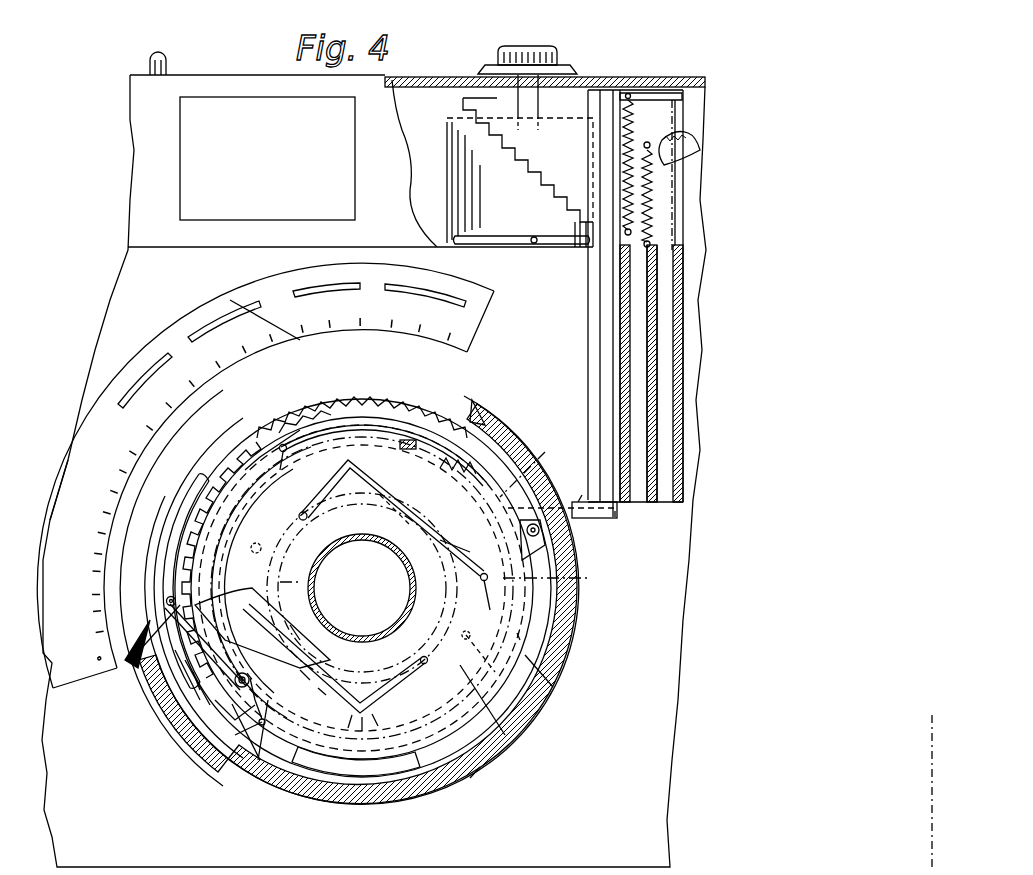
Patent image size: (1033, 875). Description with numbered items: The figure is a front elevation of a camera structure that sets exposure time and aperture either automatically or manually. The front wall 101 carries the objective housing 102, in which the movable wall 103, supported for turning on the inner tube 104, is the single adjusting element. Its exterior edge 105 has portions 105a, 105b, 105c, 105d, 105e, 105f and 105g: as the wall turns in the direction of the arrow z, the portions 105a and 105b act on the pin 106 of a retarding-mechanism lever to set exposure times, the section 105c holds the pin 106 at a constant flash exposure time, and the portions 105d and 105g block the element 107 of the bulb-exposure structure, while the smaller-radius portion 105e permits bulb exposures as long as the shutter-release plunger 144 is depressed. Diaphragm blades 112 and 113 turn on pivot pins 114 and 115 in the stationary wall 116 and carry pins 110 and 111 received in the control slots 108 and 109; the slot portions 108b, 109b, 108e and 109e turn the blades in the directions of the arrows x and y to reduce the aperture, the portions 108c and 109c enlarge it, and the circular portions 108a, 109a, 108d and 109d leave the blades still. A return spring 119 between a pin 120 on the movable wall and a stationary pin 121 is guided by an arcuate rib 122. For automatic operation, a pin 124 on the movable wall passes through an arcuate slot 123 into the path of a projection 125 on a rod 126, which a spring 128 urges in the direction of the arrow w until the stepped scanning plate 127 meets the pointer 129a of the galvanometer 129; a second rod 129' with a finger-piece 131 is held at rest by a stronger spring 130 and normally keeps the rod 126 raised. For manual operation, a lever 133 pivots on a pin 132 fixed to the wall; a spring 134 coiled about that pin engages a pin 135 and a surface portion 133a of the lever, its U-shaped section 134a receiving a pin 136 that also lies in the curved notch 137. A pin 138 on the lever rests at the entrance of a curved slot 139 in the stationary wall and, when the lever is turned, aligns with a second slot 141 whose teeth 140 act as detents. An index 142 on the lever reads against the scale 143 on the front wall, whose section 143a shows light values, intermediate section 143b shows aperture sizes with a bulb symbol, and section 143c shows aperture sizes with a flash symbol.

The front wall 101 is at (82, 753).
The objective housing 102 is at (576, 624).
The movable wall 103 is at (296, 583).
The inner tube 104 is at (342, 543).
The exterior edge 105 is at (440, 760).
The curved edge portion 105a is at (300, 775).
The curved edge portion 105b is at (486, 767).
The edge section 105c is at (518, 633).
The curved edge portion 105d is at (373, 450).
The curved edge portion 105e is at (260, 456).
The edge portion 105f is at (258, 760).
The curved edge portion 105g is at (250, 590).
The pin 106 is at (258, 745).
The element of bulb-exposure structure 107 is at (420, 432).
The control slot 108 is at (449, 552).
The curved slot portion 108a is at (505, 583).
The slot portion 108b is at (468, 548).
The curved slot portion 108c is at (412, 522).
The curved slot portion 108d is at (345, 398).
The slot portion 108e is at (304, 512).
The control slot 109 is at (340, 702).
The curved slot portion 109a is at (290, 625).
The slot portion 109b is at (300, 672).
The curved slot portion 109c is at (322, 682).
The curved slot portion 109d is at (368, 716).
The slot portion 109e is at (418, 668).
The pin 110 is at (465, 620).
The pin 111 is at (262, 604).
The diaphragm blade 112 is at (505, 735).
The diaphragm blade 113 is at (272, 522).
The pivot pin 114 is at (553, 687).
The pivot pin 115 is at (260, 546).
The stationary wall 116 is at (318, 410).
The return spring 119 is at (452, 462).
The pin 120 is at (528, 467).
The stationary pin 121 is at (283, 444).
The arcuate rib 122 is at (280, 310).
The slot 123 is at (553, 603).
The pin 124 is at (545, 530).
The projection 125 is at (582, 515).
The elongated rod 126 is at (612, 323).
The scanning plate 127 is at (568, 240).
The spring 128 is at (622, 126).
The galvanometer 129 is at (482, 172).
The pointer 129a is at (535, 244).
The second rod 129' is at (605, 373).
The spring 130 is at (640, 185).
The finger-piece 131 is at (672, 145).
The pin 132 is at (232, 706).
The lever 133 is at (168, 690).
The surface portion 133a is at (175, 695).
The spring 134 is at (215, 710).
The U-shaped section 134a is at (194, 672).
The pin 135 is at (263, 719).
The pin 136 is at (190, 700).
The curved notch 137 is at (228, 686).
The pin 138 is at (166, 600).
The elongated curved slot 139 is at (170, 560).
The teeth 140 is at (228, 468).
The second curved slot 141 is at (200, 540).
The index 142 is at (130, 655).
The scale 143 is at (128, 362).
The scale section 143a is at (92, 428).
The intermediate scale section 143b is at (178, 335).
The scale section 143c is at (375, 298).
The shutter-release plunger 144 is at (168, 64).
The arrow w is at (580, 440).
The arrow x is at (482, 618).
The arrow y is at (271, 550).
The arrow z is at (440, 373).